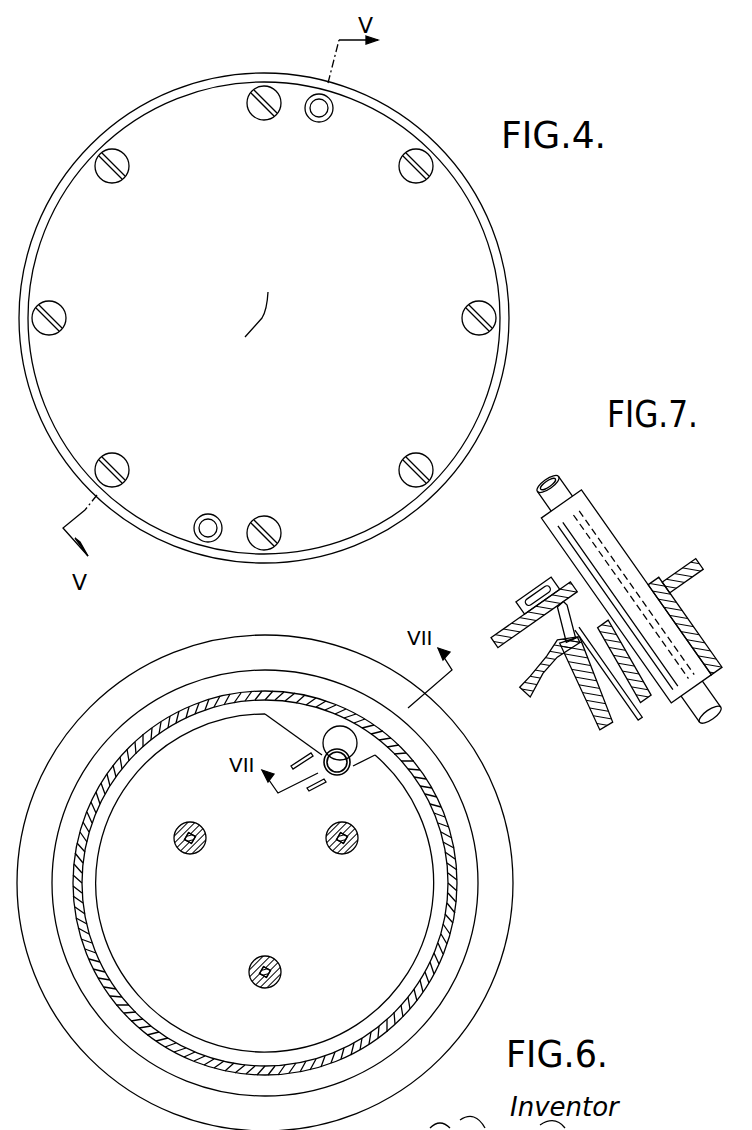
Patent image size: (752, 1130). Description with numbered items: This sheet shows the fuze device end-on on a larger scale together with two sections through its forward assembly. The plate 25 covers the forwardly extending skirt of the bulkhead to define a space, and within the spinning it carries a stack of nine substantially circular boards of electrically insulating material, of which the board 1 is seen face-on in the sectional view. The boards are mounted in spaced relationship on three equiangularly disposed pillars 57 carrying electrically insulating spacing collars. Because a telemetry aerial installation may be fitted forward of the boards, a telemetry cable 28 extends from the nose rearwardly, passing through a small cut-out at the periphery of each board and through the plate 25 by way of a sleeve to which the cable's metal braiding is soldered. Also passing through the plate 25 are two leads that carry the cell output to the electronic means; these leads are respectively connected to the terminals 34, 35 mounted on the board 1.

The board 1 is at (378, 927).
The plate 25 is at (426, 815).
The telemetry cable 28 is at (352, 766).
The terminal 34 is at (297, 762).
The terminal 35 is at (316, 790).
The pillar 57 is at (285, 972).